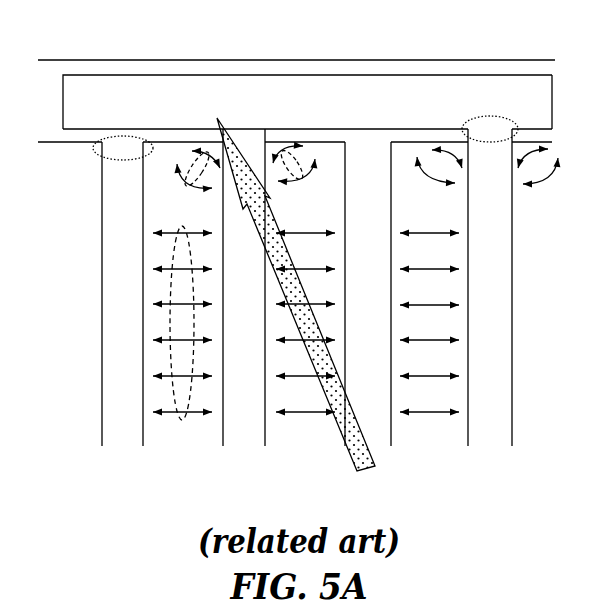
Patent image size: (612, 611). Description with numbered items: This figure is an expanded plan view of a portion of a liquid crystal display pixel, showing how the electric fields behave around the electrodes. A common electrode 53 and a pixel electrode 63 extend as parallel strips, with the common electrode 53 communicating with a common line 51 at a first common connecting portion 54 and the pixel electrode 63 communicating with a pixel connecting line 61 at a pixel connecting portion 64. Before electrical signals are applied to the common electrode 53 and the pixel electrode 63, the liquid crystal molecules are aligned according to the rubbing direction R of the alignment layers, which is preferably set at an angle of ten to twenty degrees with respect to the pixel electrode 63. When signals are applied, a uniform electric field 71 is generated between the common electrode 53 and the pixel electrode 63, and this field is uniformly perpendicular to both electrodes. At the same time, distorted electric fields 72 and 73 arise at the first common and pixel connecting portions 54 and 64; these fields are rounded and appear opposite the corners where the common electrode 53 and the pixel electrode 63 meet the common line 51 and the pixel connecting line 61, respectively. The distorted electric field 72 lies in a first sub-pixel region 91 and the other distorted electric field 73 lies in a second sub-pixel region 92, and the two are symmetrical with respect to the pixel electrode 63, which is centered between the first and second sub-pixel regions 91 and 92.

The common line 51 is at (318, 59).
The common electrode 53 is at (102, 283).
The first common connecting portion 54 is at (103, 141).
The pixel connecting line 61 is at (421, 74).
The pixel electrode 63 is at (223, 353).
The pixel connecting portion 64 is at (497, 114).
The uniform electric field 71 is at (182, 226).
The distorted electric field 72 is at (212, 148).
The distorted electric field 73 is at (300, 157).
The first sub-pixel region 91 is at (178, 433).
The second sub-pixel region 92 is at (308, 433).
The rubbing direction R is at (252, 170).